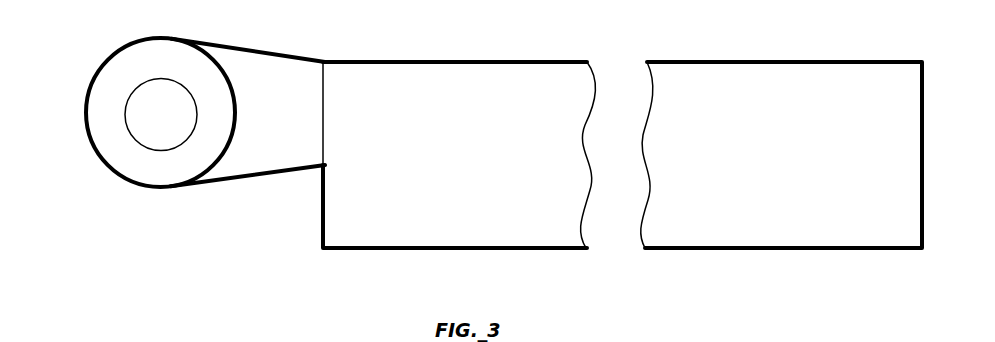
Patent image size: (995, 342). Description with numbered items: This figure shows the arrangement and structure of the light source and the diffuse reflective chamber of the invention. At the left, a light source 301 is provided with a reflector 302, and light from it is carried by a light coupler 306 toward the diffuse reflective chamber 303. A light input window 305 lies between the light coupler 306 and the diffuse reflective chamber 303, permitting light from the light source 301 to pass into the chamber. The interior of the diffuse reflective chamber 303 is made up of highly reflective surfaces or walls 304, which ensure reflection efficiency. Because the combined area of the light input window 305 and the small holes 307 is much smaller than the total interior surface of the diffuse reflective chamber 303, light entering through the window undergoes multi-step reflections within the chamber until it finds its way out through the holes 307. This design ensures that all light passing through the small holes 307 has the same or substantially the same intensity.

The light source 301 is at (123, 68).
The reflector 302 is at (120, 177).
The diffuse reflective chamber 303 is at (567, 233).
The highly reflective surfaces or walls 304 is at (325, 221).
The light input window 305 is at (325, 93).
The light coupler 306 is at (256, 70).
The small holes 307 is at (622, 147).